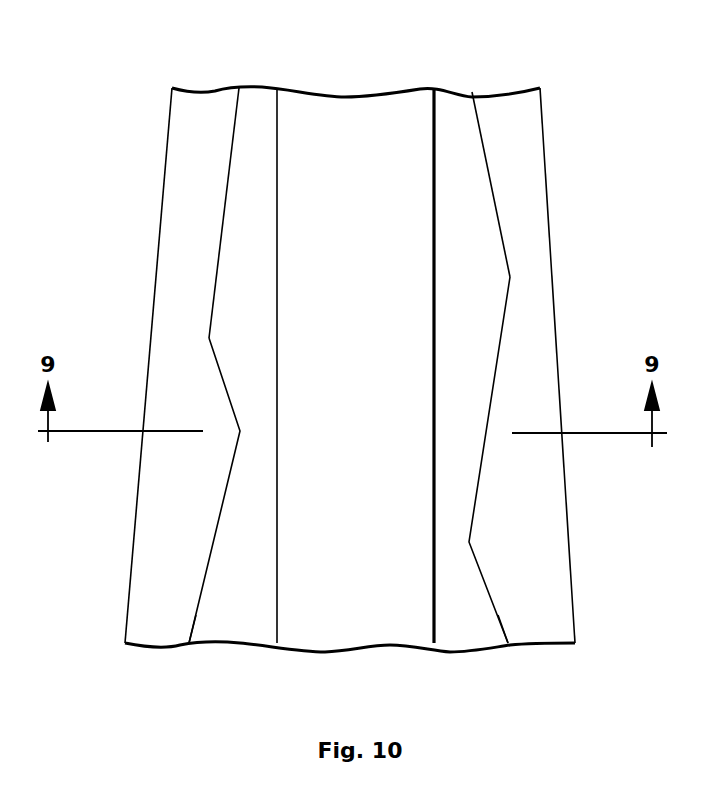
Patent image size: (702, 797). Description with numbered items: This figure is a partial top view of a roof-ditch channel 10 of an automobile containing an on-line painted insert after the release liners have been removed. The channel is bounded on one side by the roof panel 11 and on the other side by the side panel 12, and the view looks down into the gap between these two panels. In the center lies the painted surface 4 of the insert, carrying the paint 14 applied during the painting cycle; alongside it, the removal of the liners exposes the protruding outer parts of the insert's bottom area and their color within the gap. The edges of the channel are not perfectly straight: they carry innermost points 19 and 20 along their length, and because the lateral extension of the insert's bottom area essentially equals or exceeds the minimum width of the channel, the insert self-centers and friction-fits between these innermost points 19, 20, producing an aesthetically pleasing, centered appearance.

The surface 4 is at (333, 108).
The roof-ditch channel 10 is at (338, 632).
The roof panel 11 is at (169, 262).
The side panel 12 is at (530, 211).
The paint 14 is at (380, 117).
The innermost point 19 is at (238, 432).
The innermost point 20 is at (475, 542).